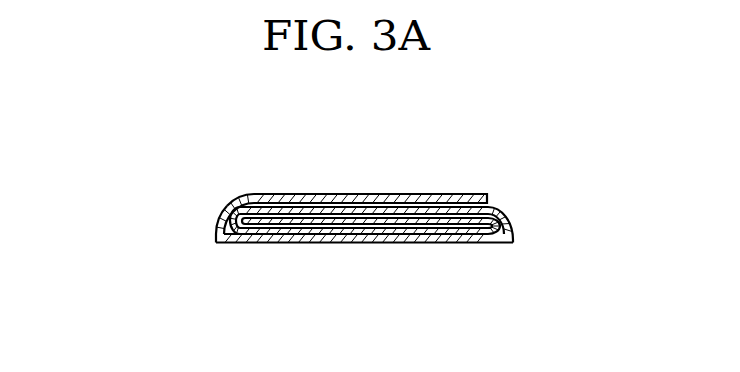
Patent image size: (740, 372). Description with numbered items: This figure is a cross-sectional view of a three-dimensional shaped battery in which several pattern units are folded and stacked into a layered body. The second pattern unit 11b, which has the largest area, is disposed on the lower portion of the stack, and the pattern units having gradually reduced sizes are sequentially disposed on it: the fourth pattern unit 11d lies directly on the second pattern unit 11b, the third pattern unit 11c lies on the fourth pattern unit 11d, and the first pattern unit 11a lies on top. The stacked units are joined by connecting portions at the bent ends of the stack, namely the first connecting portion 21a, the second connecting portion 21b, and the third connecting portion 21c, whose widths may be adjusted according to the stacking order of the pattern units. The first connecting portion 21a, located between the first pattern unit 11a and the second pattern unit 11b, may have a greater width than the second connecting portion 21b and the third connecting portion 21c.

The first pattern unit 11a is at (323, 199).
The second pattern unit 11b is at (428, 240).
The third pattern unit 11c is at (386, 211).
The fourth pattern unit 11d is at (363, 231).
The first connecting portion 21a is at (218, 228).
The second connecting portion 21b is at (503, 228).
The third connecting portion 21c is at (243, 198).